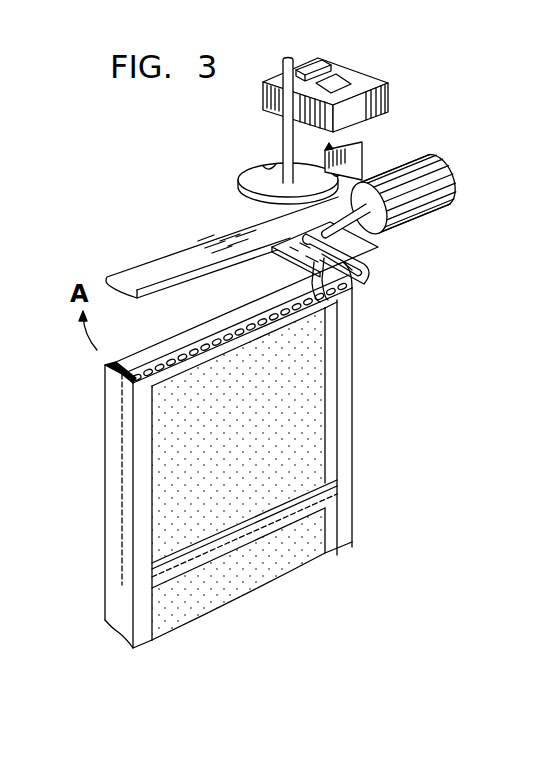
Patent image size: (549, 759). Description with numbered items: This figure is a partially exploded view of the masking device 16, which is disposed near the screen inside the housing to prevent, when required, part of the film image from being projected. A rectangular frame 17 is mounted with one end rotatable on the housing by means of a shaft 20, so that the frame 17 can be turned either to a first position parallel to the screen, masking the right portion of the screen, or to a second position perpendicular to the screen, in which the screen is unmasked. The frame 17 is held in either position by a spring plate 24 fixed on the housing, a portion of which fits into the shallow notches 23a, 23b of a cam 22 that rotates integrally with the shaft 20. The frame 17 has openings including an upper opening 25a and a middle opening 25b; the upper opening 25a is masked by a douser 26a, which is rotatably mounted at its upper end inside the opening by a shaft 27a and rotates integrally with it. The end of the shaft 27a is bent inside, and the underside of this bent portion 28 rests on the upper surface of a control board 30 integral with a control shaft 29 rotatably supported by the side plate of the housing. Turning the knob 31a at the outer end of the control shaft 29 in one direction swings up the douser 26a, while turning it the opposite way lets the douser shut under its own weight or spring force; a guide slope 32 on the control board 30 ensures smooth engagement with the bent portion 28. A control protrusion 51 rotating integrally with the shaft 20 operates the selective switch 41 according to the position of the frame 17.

The masking device 16 is at (352, 426).
The rectangular frame 17 is at (352, 502).
The shaft 20 is at (283, 125).
The cam 22 is at (244, 184).
The notch 23a is at (345, 172).
The notch 23b is at (268, 164).
The spring plate 24 is at (362, 150).
The opening 25a is at (327, 378).
The opening 25b is at (335, 540).
The douser 26a is at (160, 492).
The shaft 27a is at (352, 274).
The bent portion 28 is at (350, 246).
The control shaft 29 is at (375, 228).
The control board 30 is at (300, 260).
The knob 31a is at (441, 187).
The guide slope 32 is at (367, 272).
The selective switch 41 is at (388, 88).
The control protrusion 51 is at (333, 78).